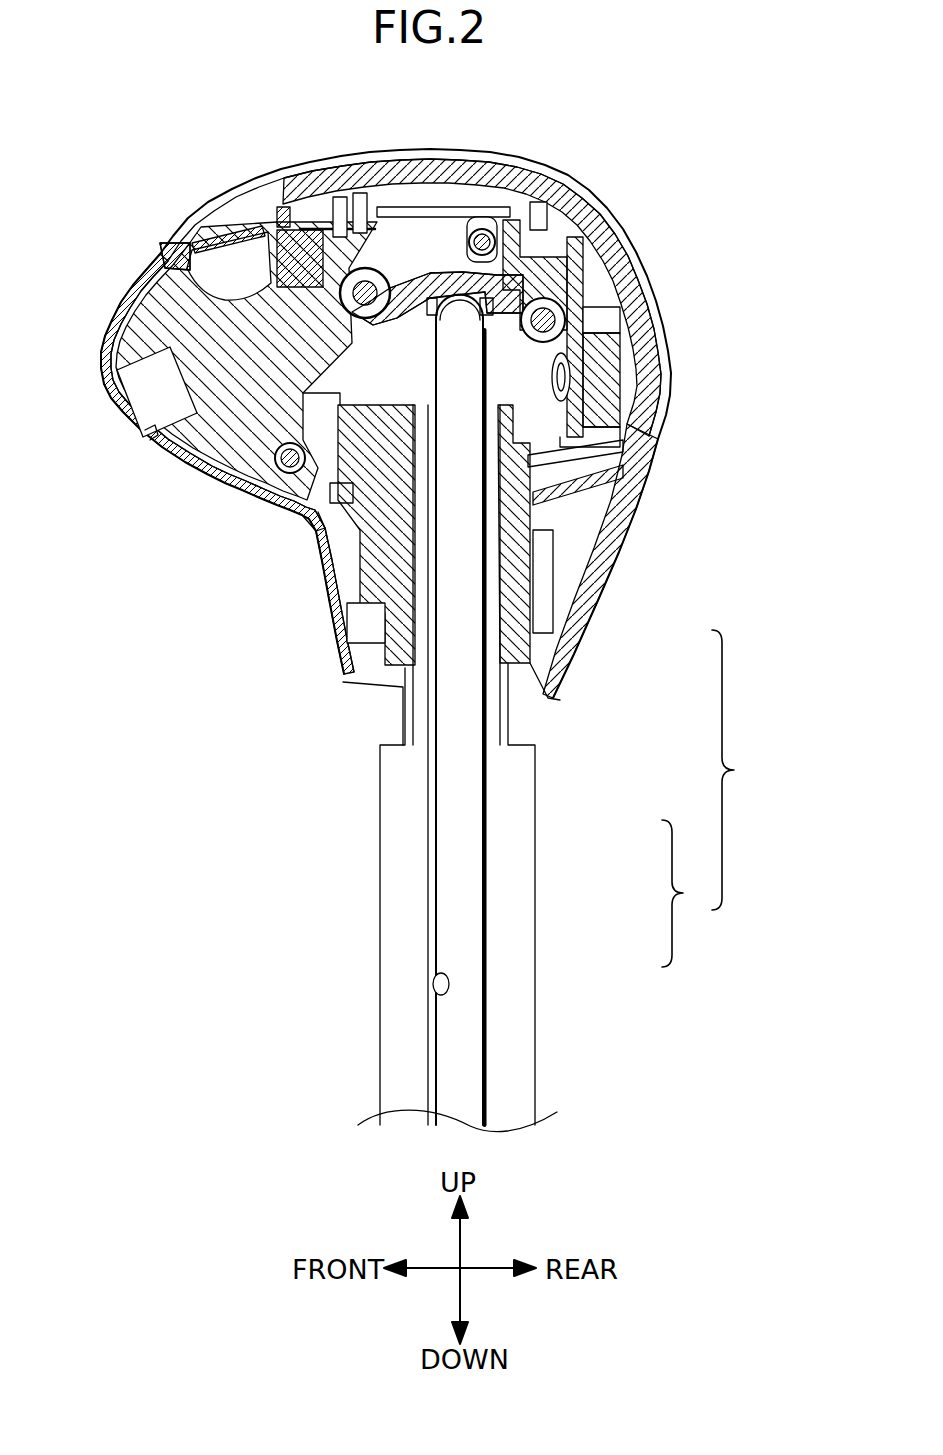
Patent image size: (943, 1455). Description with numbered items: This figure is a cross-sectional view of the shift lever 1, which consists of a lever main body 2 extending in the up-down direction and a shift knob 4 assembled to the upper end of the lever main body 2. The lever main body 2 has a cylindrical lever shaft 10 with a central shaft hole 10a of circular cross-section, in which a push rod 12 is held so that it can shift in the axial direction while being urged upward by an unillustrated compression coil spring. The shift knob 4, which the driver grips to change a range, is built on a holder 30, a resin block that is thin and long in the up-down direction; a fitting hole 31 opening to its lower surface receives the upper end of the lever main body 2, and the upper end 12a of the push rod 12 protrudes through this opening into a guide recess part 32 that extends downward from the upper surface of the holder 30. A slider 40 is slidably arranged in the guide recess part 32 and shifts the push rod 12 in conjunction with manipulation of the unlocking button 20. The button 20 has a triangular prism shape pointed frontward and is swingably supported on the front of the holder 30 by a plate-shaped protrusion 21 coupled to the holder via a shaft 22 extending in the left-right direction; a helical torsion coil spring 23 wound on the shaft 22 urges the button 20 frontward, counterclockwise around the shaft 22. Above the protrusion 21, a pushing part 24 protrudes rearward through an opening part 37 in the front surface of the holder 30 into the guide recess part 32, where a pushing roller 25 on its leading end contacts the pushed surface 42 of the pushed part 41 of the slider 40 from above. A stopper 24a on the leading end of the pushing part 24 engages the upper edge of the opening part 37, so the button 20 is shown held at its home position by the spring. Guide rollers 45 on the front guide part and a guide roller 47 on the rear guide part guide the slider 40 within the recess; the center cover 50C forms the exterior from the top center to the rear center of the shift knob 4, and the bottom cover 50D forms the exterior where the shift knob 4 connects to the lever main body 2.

The shift lever 1 is at (734, 770).
The lever main body 2 is at (684, 893).
The shift knob 4 is at (630, 565).
The lever shaft 10 is at (497, 957).
The shaft hole 10a is at (436, 990).
The push rod 12 is at (457, 695).
The upper end of the push rod 12a is at (457, 307).
The unlocking button 20 is at (158, 331).
The protrusion 21 is at (267, 430).
The shaft 22 is at (290, 476).
The helical torsion coil spring 23 is at (293, 532).
The pushing part 24 is at (175, 256).
The stopper 24a is at (198, 242).
The pushing roller 25 is at (320, 278).
The holder 30 is at (382, 558).
The fitting hole 31 is at (395, 683).
The guide recess part 32 is at (567, 383).
The opening part 37 is at (172, 290).
The slider 40 is at (567, 238).
The pushed part 41 is at (437, 298).
The pushed surface 42 is at (407, 263).
The guide rollers 45 is at (477, 222).
The guide roller 47 is at (562, 303).
The center cover 50C is at (477, 170).
The bottom cover 50D is at (318, 598).